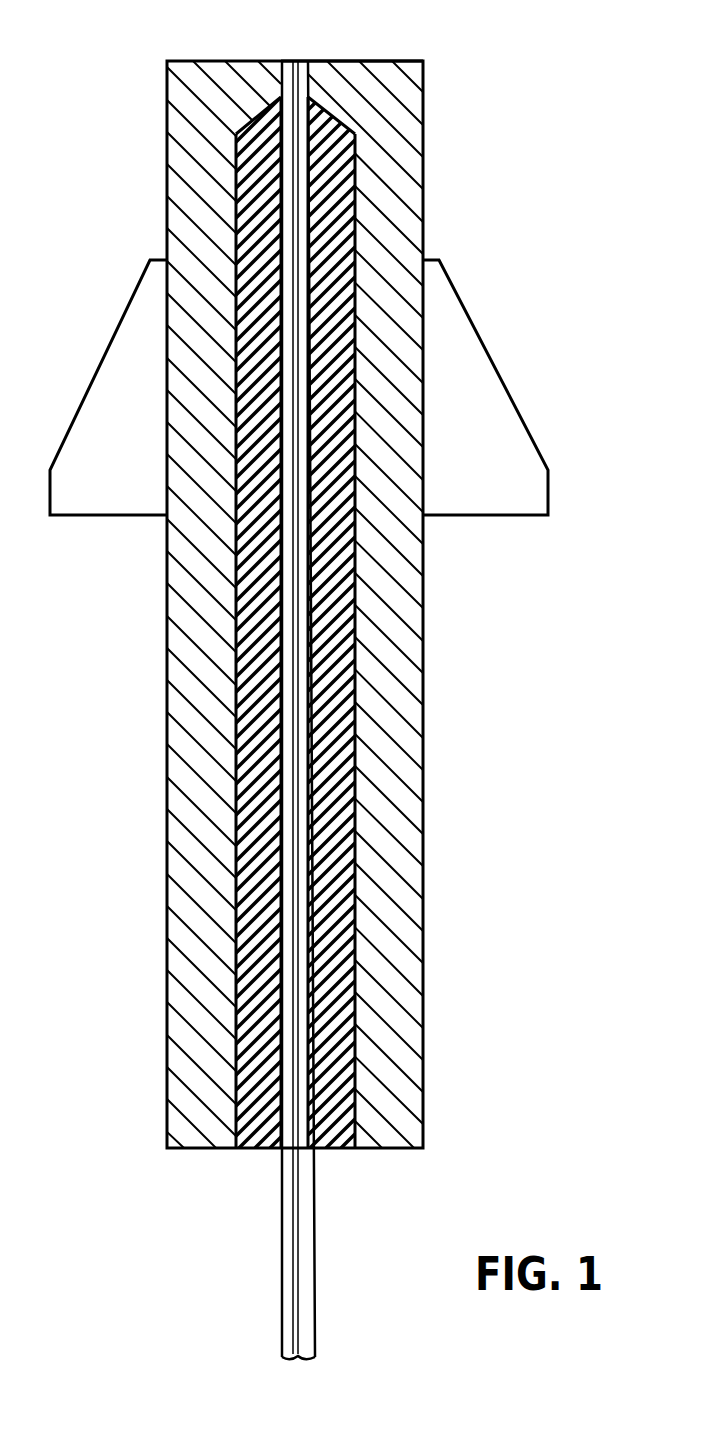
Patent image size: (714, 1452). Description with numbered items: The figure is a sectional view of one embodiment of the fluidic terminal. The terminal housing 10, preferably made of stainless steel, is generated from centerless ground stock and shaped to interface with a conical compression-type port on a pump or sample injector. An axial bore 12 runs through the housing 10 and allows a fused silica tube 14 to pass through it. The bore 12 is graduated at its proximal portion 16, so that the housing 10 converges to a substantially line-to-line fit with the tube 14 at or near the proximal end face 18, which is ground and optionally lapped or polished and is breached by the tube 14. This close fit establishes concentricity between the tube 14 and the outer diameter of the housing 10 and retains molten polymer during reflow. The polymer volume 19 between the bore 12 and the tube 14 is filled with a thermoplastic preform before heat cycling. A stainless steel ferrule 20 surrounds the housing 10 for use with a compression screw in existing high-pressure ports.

The terminal housing 10 is at (169, 960).
The axial bore 12 is at (236, 710).
The fused silica tube 14 is at (315, 1260).
The proximal portion 16 is at (229, 86).
The proximal end face 18 is at (362, 62).
The polymer volume 19 is at (357, 222).
The stainless steel ferrule 20 is at (537, 435).